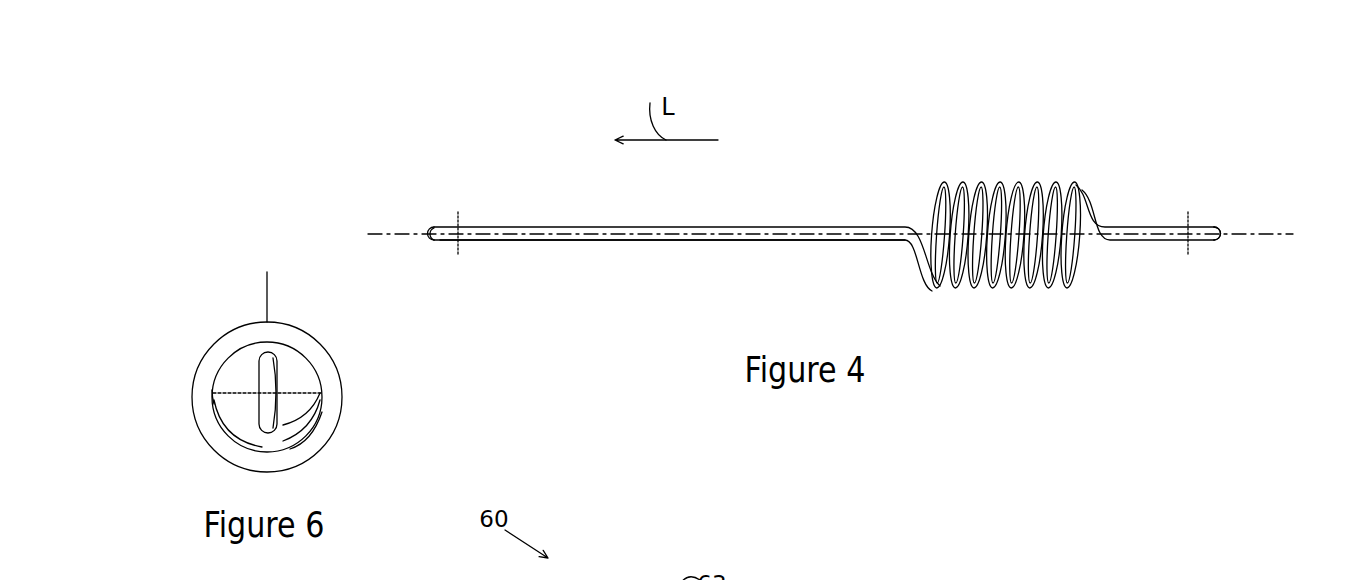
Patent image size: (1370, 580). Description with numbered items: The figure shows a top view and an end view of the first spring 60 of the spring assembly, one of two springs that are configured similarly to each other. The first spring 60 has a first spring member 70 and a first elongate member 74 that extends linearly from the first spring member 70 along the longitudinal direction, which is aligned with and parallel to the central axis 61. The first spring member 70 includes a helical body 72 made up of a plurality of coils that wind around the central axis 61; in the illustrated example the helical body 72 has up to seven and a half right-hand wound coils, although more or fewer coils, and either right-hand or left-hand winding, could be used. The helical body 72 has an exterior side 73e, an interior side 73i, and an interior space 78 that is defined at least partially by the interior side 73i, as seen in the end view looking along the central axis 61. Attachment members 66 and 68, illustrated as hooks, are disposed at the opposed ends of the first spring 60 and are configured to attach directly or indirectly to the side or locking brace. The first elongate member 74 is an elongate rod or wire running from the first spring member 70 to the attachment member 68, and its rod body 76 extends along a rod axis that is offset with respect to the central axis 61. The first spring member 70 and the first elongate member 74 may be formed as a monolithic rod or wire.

In FIG. 4, the first spring 60 is at (417, 118).
In FIG. 6, the first spring 60 is at (167, 282).
In FIG. 4, the central axis 61 is at (1260, 233).
In FIG. 4, the attachment member 66 is at (443, 227).
In FIG. 4, the attachment member 68 is at (1208, 241).
In FIG. 6, the attachment member 68 is at (263, 417).
In FIG. 4, the first spring member 70 is at (942, 166).
In FIG. 6, the first spring member 70 is at (339, 442).
In FIG. 4, the helical body 72 is at (1088, 205).
In FIG. 6, the helical body 72 is at (322, 333).
In FIG. 6, the exterior side 73e is at (267, 279).
In FIG. 6, the interior side 73i is at (212, 402).
In FIG. 4, the first elongate member 74 is at (603, 228).
In FIG. 4, the rod body 76 is at (514, 238).
In FIG. 6, the interior space 78 is at (312, 381).